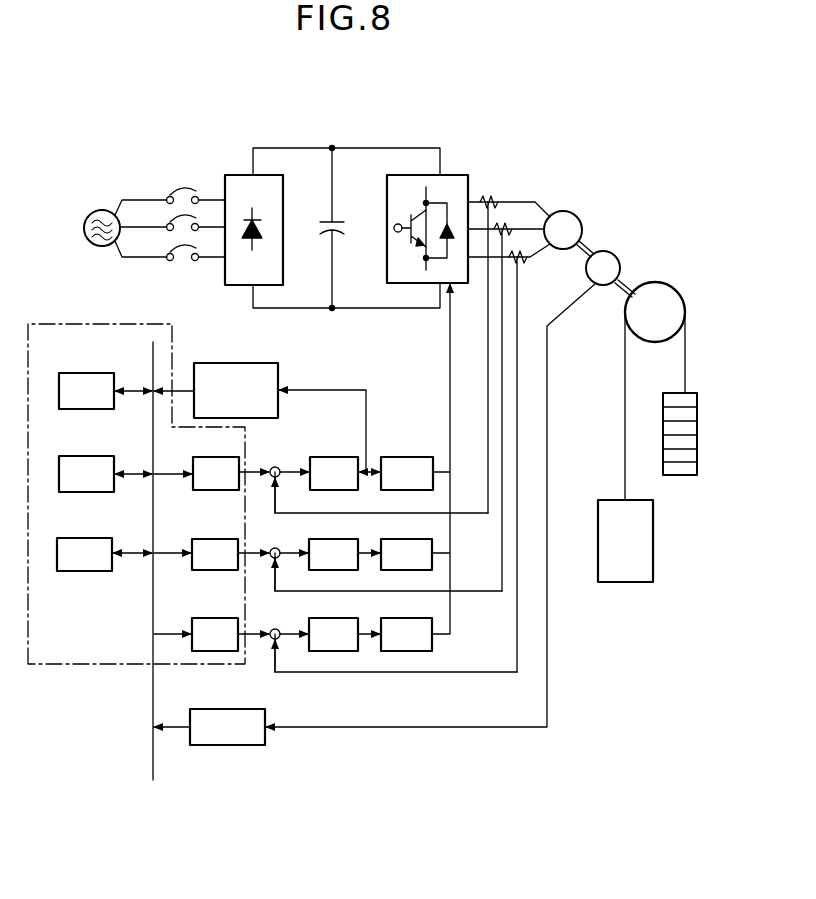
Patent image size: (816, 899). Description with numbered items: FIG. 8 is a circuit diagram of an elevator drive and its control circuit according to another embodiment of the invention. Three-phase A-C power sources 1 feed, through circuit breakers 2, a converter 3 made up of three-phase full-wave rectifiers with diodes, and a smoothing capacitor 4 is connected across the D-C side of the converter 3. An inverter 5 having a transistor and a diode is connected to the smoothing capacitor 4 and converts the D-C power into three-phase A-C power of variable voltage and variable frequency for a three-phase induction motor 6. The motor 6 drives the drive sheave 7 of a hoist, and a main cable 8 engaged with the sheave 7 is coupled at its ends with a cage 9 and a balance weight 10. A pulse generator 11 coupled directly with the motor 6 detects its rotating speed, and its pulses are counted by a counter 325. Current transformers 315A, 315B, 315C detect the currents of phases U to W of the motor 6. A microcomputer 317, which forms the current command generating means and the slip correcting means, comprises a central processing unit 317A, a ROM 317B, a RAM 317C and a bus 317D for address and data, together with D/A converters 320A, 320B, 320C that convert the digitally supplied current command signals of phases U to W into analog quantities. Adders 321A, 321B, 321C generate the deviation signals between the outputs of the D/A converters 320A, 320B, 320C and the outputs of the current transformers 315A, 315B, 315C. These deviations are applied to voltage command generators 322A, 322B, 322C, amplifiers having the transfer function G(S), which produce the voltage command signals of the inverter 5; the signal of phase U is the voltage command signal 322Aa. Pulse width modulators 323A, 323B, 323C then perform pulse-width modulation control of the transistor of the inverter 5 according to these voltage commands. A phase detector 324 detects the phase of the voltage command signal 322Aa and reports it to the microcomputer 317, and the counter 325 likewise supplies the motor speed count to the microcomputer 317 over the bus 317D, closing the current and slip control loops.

The three-phase A-C power source 1 is at (103, 208).
The circuit breaker 2 is at (183, 184).
The converter 3 is at (240, 175).
The smoothing capacitor 4 is at (344, 233).
The inverter 5 is at (442, 175).
The three-phase induction motor 6 is at (576, 214).
The drive sheave 7 is at (676, 285).
The main cable 8 is at (688, 355).
The cage 9 is at (607, 498).
The balance weight 10 is at (678, 476).
The pulse generator 11 is at (619, 261).
The current transformer 315A is at (487, 198).
The current transformer 315B is at (517, 222).
The current transformer 315C is at (532, 262).
The microcomputer 317 is at (64, 322).
The central processing unit 317A is at (70, 374).
The ROM 317B is at (71, 456).
The RAM 317C is at (70, 539).
The bus 317D is at (153, 370).
The D/A converter 320A is at (215, 457).
The D/A converter 320B is at (219, 538).
The D/A converter 320C is at (219, 618).
The adder 321A is at (277, 466).
The adder 321B is at (285, 534).
The adder 321C is at (285, 614).
The voltage command generator 322A is at (318, 452).
The voltage command generator 322B is at (317, 539).
The voltage command generator 322C is at (317, 619).
The voltage command signal 322Aa is at (338, 390).
The pulse width modulator 323A is at (397, 456).
The pulse width modulator 323B is at (387, 539).
The pulse width modulator 323C is at (387, 619).
The phase detector 324 is at (237, 364).
The counter 325 is at (234, 708).